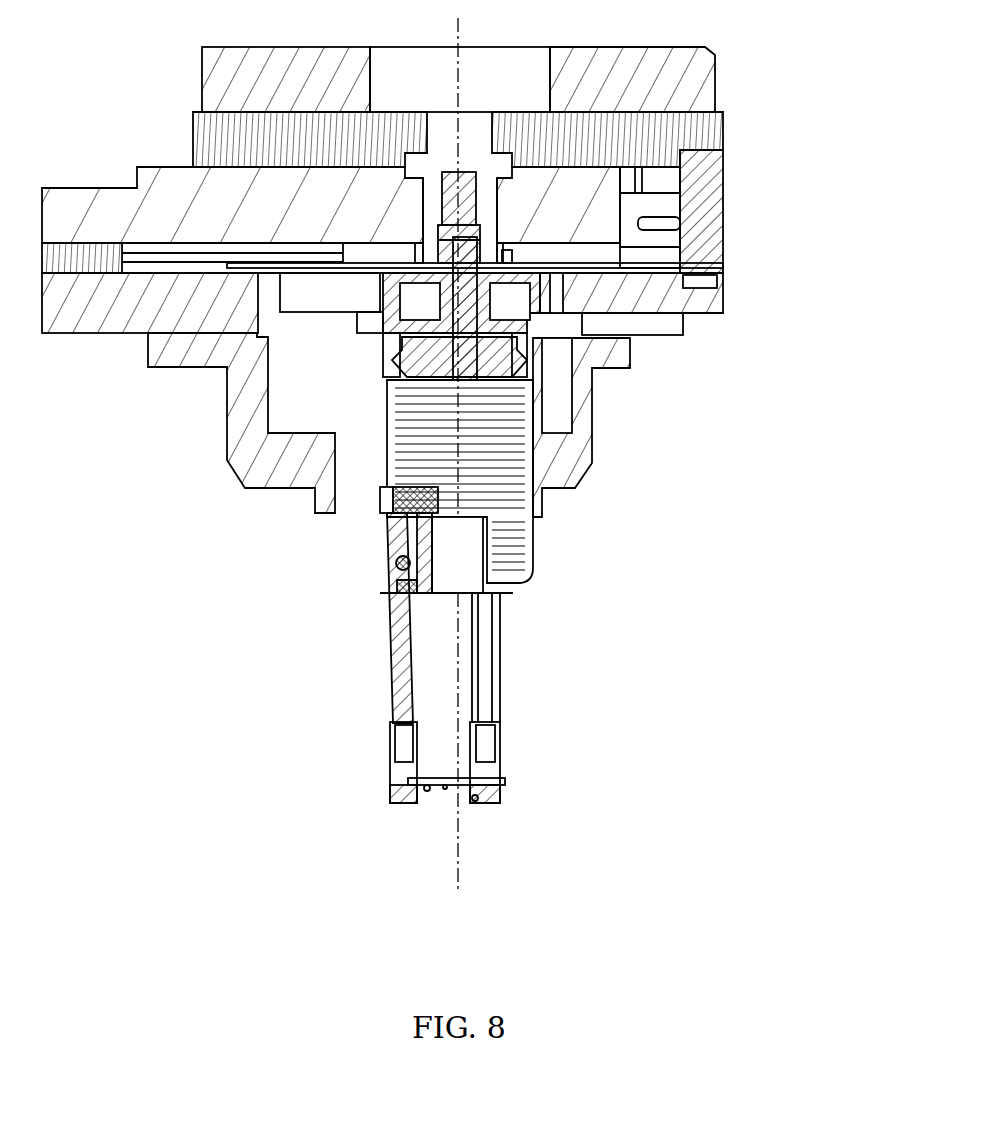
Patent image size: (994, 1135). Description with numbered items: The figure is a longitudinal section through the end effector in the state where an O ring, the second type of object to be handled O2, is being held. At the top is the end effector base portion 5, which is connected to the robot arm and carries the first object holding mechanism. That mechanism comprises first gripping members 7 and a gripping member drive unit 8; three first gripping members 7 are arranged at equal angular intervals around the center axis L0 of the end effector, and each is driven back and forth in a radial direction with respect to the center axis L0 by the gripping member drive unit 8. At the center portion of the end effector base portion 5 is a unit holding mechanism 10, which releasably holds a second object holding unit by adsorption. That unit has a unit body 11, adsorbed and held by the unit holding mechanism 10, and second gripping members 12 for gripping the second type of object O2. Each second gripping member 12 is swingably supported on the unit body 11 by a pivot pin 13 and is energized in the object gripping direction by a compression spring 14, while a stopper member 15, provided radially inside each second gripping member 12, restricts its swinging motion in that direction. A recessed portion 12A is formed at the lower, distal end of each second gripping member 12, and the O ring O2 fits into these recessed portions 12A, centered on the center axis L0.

The end effector base portion 5 is at (715, 75).
The gripping member drive unit 8 is at (112, 198).
The first gripping member 7 is at (242, 470).
The unit holding mechanism 10 is at (387, 382).
The unit body 11 is at (523, 525).
The second gripping member 12 is at (392, 770).
The pivot pin 13 is at (402, 567).
The compression spring 14 is at (393, 490).
The stopper member 15 is at (387, 612).
The recessed portion 12A is at (427, 790).
The second type of object to be handled O2 is at (445, 787).
The center axis L0 is at (457, 873).